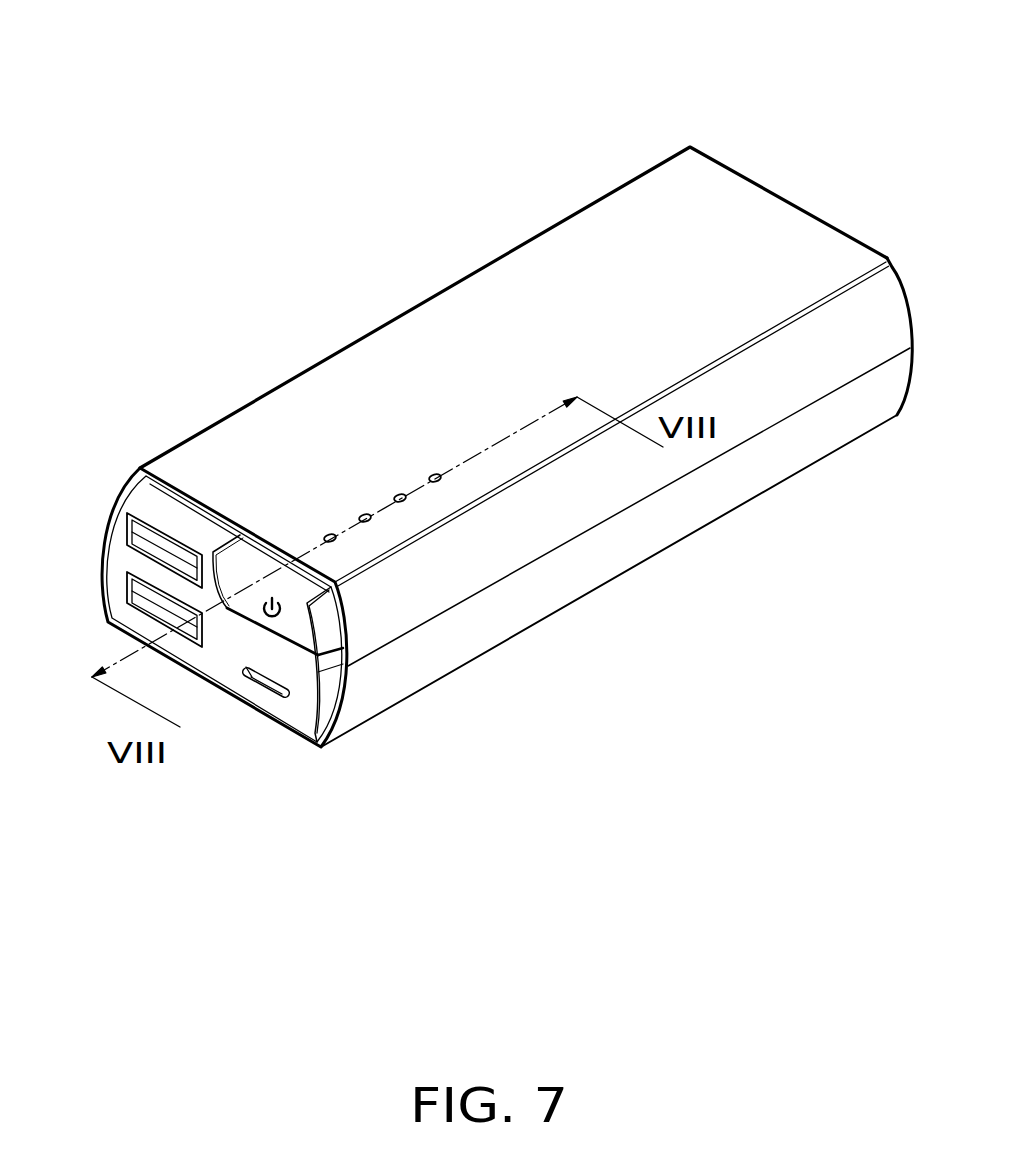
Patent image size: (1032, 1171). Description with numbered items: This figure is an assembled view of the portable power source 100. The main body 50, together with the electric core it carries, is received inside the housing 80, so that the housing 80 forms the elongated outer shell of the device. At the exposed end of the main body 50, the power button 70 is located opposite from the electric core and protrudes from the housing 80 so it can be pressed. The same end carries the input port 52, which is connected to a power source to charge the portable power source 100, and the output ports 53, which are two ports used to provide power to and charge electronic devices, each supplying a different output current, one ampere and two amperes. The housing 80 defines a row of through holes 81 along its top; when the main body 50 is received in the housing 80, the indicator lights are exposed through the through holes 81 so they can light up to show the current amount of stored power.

The portable power source 100 is at (499, 35).
The housing 80 is at (560, 272).
The through holes 81 is at (433, 473).
The main body 50 is at (148, 497).
The output ports 53 is at (138, 592).
The power button 70 is at (253, 553).
The input port 52 is at (268, 692).